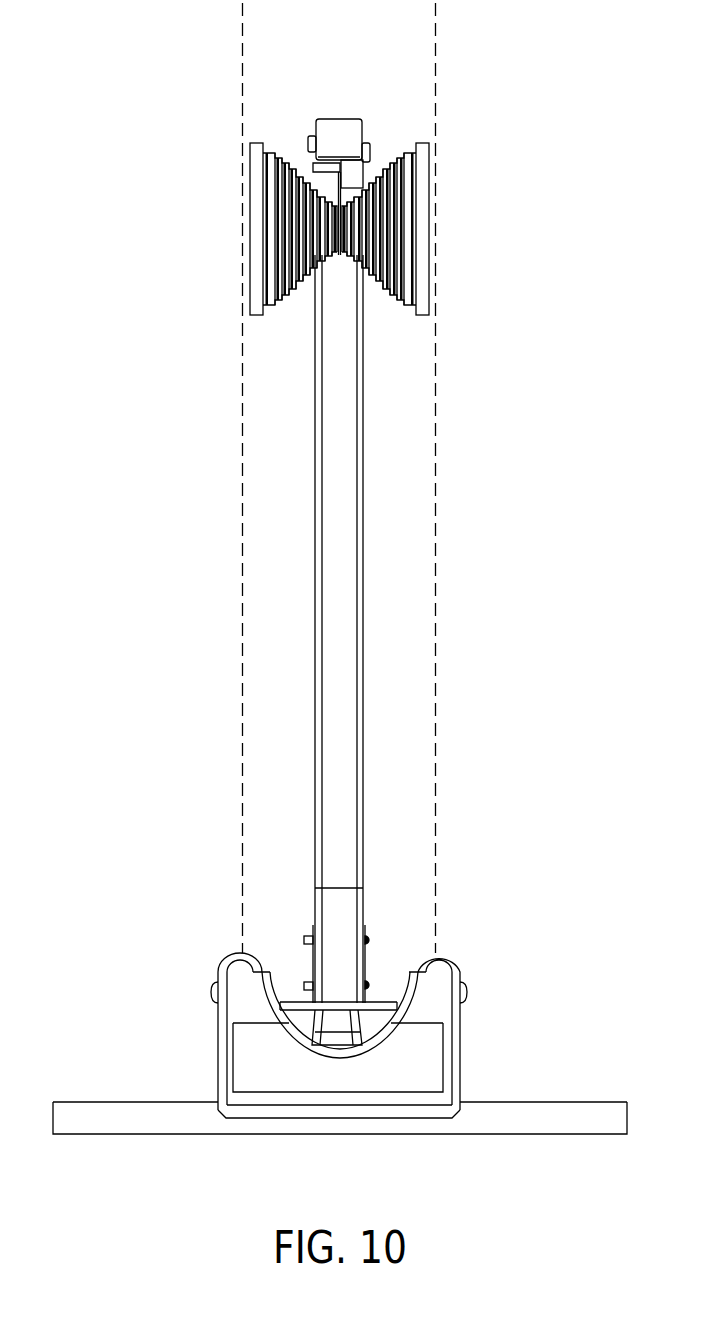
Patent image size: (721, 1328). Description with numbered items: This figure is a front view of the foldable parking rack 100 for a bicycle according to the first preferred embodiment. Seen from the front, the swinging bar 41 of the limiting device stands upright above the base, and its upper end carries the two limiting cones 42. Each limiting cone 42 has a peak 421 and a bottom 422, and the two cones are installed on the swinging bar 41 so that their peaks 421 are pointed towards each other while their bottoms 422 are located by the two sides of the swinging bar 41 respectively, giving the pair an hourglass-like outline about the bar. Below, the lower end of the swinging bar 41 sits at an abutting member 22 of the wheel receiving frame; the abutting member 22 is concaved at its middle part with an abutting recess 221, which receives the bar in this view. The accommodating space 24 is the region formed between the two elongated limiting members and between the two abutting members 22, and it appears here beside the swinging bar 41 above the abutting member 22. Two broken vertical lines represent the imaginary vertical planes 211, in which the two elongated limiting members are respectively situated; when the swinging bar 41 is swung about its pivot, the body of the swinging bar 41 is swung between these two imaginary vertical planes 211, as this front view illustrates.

The foldable parking rack 100 is at (83, 41).
The imaginary vertical planes 211 is at (243, 672).
The limiting cone 42 is at (340, 227).
The bottom 422 is at (250, 175).
The peak 421 is at (338, 253).
The swinging bar 41 is at (363, 540).
The abutting member 22 is at (258, 1062).
The accommodating space 24 is at (293, 973).
The abutting recess 221 is at (340, 1040).